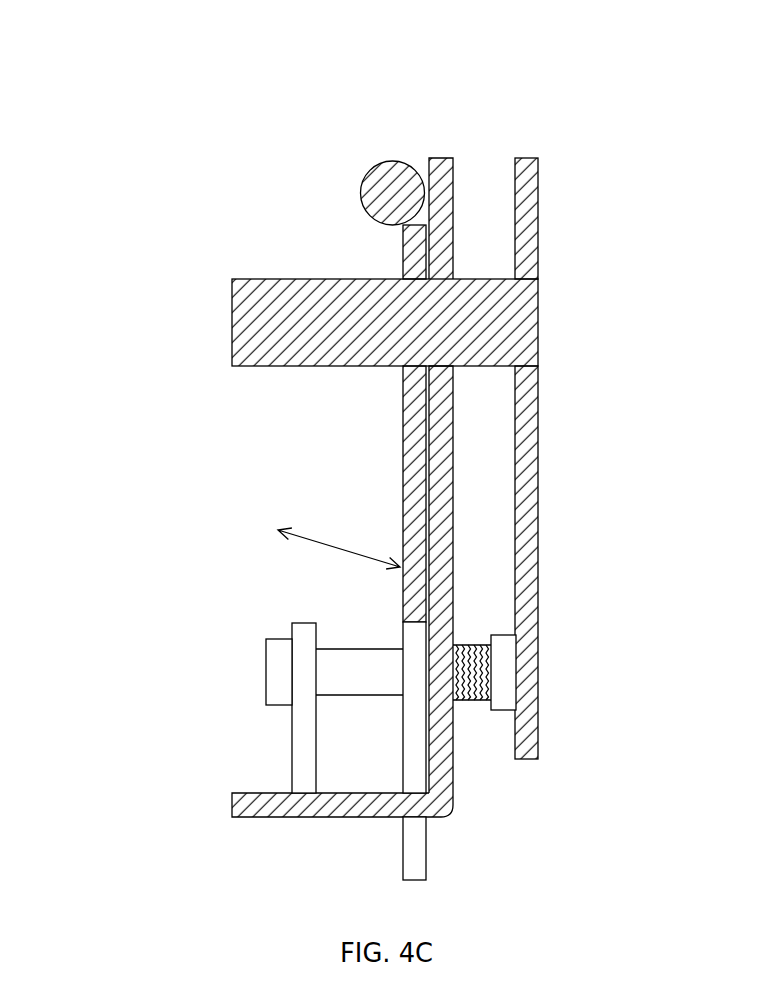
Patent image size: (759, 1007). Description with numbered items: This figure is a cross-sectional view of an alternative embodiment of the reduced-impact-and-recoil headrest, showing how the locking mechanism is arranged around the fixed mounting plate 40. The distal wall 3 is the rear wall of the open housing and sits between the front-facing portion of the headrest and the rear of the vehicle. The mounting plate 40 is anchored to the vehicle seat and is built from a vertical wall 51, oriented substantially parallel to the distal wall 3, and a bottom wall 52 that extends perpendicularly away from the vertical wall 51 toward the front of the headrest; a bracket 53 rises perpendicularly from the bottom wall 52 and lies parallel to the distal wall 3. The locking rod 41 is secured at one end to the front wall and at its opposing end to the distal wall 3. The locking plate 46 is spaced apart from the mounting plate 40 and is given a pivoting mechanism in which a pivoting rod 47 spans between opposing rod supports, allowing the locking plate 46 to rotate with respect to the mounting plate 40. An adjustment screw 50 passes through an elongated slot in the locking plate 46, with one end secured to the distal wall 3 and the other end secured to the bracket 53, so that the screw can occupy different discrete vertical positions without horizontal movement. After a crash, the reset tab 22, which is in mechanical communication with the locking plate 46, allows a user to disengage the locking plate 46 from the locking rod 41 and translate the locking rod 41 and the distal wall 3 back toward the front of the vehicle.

The distal wall 3 is at (538, 510).
The reset tab 22 is at (423, 850).
The mounting plate 40 is at (453, 187).
The locking rod 41 is at (538, 323).
The locking plate 46 is at (403, 447).
The pivoting rod 47 is at (361, 187).
The adjustment screw 50 is at (267, 672).
The vertical wall 51 is at (453, 590).
The bottom wall 52 is at (293, 820).
The bracket 53 is at (292, 748).